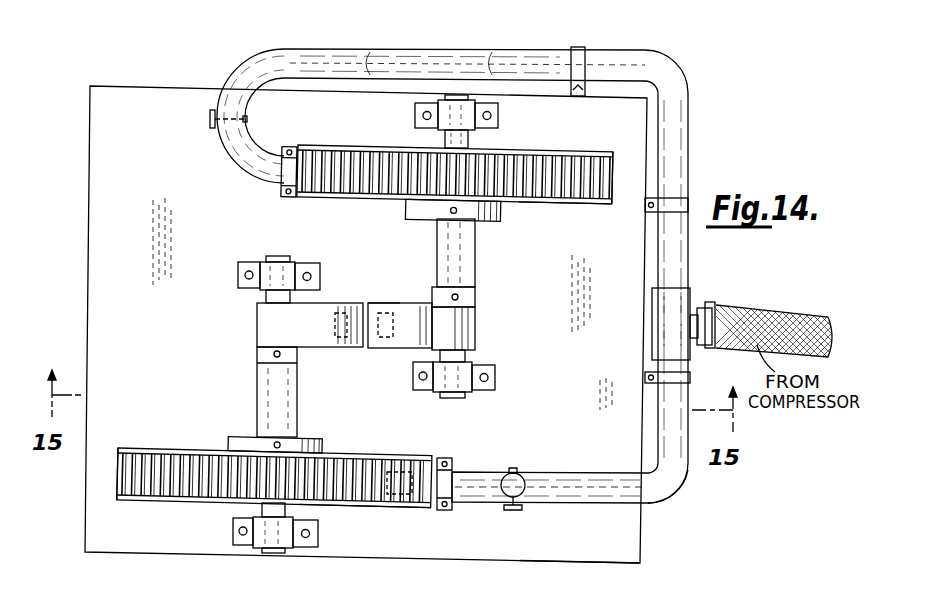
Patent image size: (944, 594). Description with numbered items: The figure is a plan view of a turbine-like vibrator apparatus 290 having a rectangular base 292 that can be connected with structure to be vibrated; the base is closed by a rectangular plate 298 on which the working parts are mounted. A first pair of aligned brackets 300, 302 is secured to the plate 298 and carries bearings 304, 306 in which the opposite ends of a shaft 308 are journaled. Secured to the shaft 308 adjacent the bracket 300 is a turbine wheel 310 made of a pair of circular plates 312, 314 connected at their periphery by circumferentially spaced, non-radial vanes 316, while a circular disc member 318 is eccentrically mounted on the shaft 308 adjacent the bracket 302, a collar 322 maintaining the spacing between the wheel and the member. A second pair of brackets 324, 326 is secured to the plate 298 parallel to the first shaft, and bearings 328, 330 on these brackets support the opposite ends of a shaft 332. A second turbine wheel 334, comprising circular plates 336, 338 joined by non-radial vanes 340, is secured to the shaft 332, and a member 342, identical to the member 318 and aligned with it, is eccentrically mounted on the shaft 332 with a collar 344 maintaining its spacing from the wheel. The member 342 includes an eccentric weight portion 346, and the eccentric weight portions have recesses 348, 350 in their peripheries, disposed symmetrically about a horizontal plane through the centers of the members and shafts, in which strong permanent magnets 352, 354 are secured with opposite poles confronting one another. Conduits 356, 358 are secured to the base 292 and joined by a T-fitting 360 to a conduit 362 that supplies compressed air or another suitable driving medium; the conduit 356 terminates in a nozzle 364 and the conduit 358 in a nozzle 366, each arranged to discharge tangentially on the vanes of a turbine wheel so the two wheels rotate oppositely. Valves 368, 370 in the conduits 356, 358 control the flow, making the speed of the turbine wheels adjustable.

The turbine-like vibrator apparatus 290 is at (668, 507).
The rectangular base 292 is at (352, 562).
The rectangular plate 298 is at (588, 561).
The bracket 300 is at (250, 549).
The bracket 302 is at (246, 263).
The bearing 304 is at (292, 549).
The bearing 306 is at (264, 270).
The shaft 308 is at (278, 256).
The turbine wheel 310 is at (386, 510).
The circular plate 312 is at (148, 503).
The circular plate 314 is at (132, 448).
The non-radial vanes 316 is at (178, 458).
The circular disc member 318 is at (257, 322).
The collar 322 is at (298, 393).
The bracket 324 is at (497, 379).
The bracket 326 is at (499, 119).
The bearing 328 is at (438, 391).
The bearing 330 is at (440, 111).
The shaft 332 is at (462, 398).
The turbine wheel 334 is at (566, 200).
The circular plate 336 is at (340, 197).
The circular plate 338 is at (568, 146).
The non-radial vanes 340 is at (395, 150).
The member 342 is at (475, 310).
The collar 344 is at (472, 240).
The eccentric weight portion 346 is at (380, 349).
The recess 348 is at (335, 326).
The recess 350 is at (394, 324).
The permanent magnet 352 is at (343, 303).
The permanent magnet 354 is at (378, 303).
The conduit 356 is at (578, 472).
The conduit 358 is at (596, 52).
The T-fitting 360 is at (688, 300).
The conduit 362 is at (748, 308).
The nozzle 364 is at (401, 460).
The nozzle 366 is at (324, 146).
The valve 368 is at (522, 507).
The valve 370 is at (210, 126).